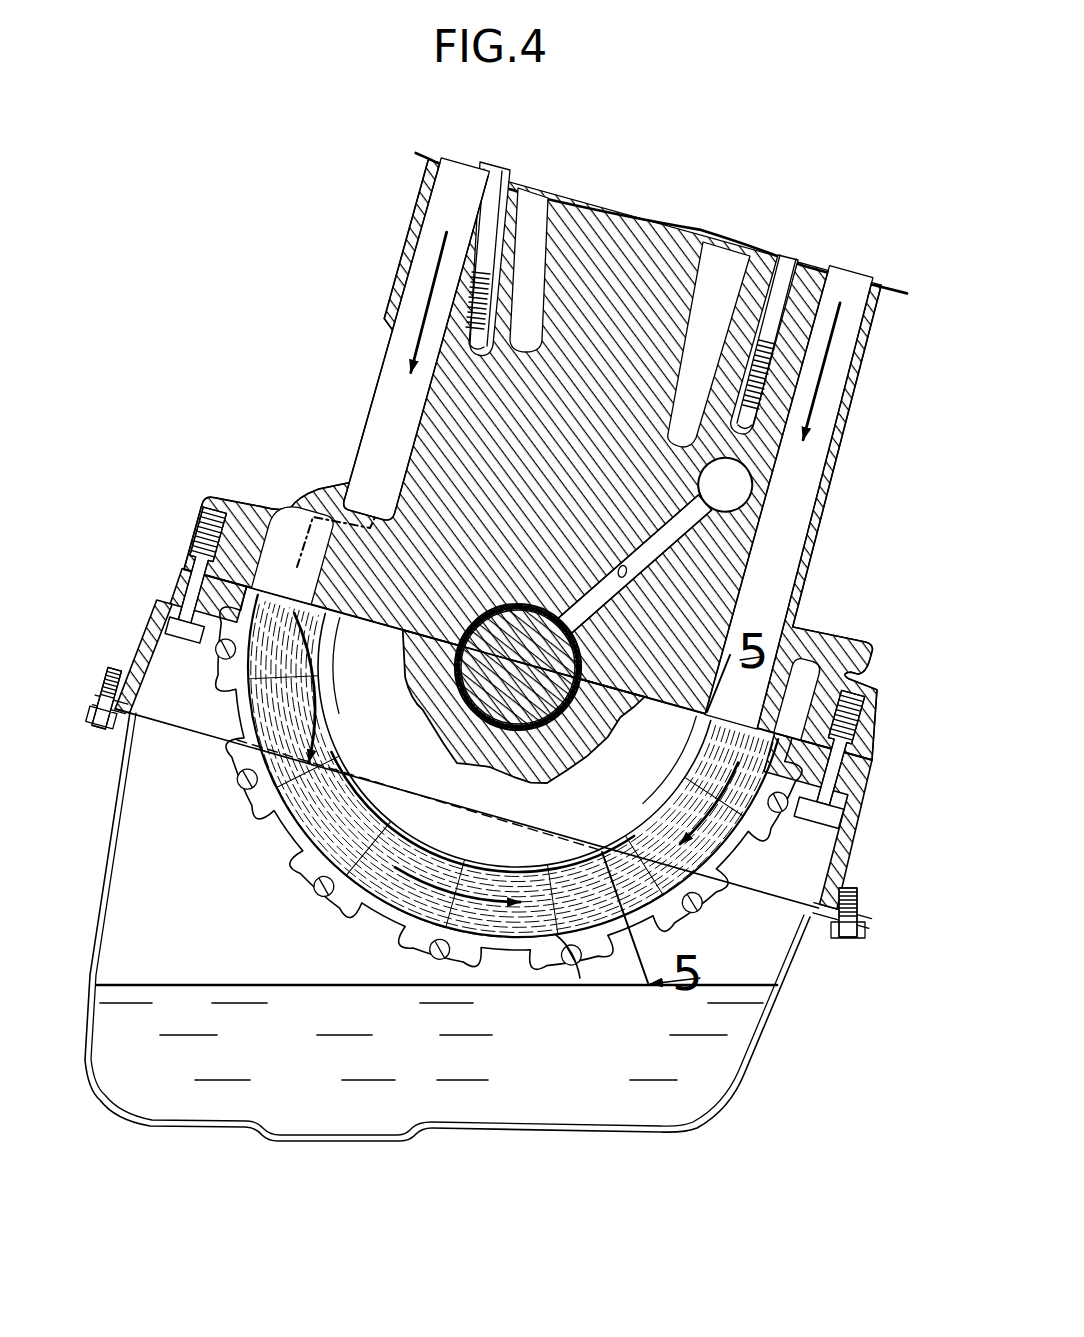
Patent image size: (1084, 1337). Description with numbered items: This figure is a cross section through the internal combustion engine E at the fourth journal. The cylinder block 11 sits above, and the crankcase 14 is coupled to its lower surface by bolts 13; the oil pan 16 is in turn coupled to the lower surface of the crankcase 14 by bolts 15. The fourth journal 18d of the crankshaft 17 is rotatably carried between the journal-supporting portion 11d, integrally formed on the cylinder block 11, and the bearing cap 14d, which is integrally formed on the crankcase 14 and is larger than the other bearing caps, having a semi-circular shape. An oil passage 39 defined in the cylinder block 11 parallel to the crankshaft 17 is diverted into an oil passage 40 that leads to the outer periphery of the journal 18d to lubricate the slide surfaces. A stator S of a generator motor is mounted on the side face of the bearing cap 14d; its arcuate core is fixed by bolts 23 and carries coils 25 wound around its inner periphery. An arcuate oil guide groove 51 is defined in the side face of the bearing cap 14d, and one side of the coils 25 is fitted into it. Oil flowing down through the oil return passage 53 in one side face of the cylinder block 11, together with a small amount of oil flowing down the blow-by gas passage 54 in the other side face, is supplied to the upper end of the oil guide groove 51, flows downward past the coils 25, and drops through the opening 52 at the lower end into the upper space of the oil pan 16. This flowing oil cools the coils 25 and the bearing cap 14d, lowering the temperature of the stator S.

The cylinder block 11 is at (398, 240).
The journal-supporting portion 11d is at (546, 561).
The blow-by gas passage 54 is at (395, 418).
The oil return passage 53 is at (788, 507).
The oil passage 39 is at (712, 498).
The oil passage 40 is at (633, 564).
The crankshaft 17 is at (490, 612).
The journal 18d is at (533, 680).
The bolt 13 is at (182, 645).
The crankcase 14 is at (858, 845).
The bearing cap 14d is at (275, 852).
The bolt 23 is at (213, 660).
The coil 25 is at (298, 646).
The oil guide groove 51 is at (412, 858).
The opening 52 is at (608, 984).
The bolt 15 is at (106, 728).
The oil pan 16 is at (775, 1030).
The internal combustion engine E is at (325, 328).
The stator S is at (592, 856).